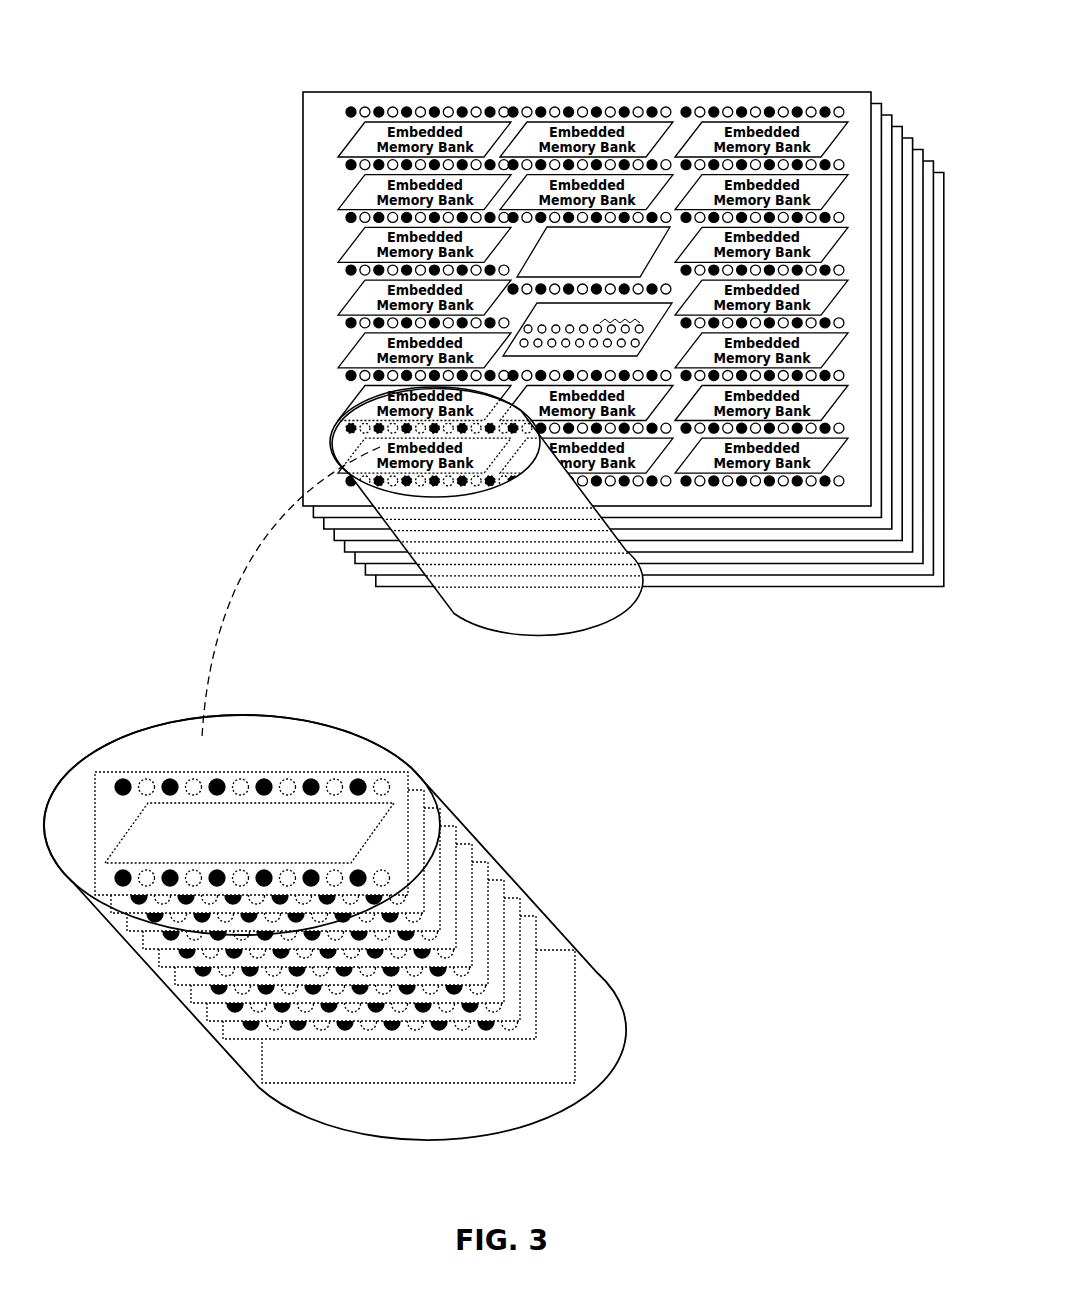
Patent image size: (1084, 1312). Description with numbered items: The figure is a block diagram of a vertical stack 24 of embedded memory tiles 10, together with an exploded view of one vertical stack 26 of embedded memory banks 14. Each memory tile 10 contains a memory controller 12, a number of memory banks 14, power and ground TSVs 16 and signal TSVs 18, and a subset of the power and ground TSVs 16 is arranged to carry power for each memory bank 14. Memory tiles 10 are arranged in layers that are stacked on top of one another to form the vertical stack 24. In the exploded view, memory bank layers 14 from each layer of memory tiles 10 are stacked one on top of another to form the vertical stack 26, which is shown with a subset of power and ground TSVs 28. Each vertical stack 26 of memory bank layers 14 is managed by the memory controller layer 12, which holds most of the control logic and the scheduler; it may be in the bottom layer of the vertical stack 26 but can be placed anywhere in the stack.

The embedded memory tile 10 is at (588, 92).
The memory controller 12 is at (660, 246).
The memory bank 14 is at (342, 131).
The power and ground TSVs 16 is at (825, 106).
The signal TSVs 18 is at (520, 322).
The vertical stack 24 is at (960, 172).
The vertical stack of embedded memory banks 26 is at (612, 612).
The subset of power and ground TSVs 28 is at (145, 780).